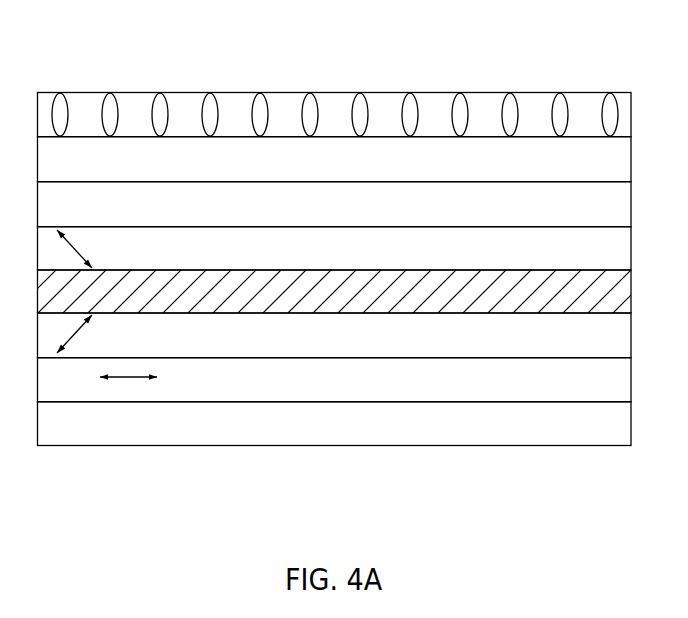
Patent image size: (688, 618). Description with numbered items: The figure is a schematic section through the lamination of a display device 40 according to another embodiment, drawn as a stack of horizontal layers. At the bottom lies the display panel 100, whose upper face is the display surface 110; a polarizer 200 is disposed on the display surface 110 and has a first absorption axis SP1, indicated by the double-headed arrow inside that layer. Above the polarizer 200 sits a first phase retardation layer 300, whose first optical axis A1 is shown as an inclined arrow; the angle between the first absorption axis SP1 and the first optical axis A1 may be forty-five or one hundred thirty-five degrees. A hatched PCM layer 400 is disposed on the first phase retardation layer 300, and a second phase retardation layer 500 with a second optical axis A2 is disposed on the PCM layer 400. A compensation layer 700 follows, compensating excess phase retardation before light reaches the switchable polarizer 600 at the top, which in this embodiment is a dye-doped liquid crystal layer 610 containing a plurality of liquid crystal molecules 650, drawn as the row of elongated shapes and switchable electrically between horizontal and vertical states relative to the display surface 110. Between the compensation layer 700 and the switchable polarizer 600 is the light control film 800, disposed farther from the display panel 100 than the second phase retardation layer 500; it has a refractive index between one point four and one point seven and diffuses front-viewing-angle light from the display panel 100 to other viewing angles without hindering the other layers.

The display device 40 is at (40, 52).
The switchable polarizer 600 is at (234, 92).
The dye-doped liquid crystal layer 610 is at (335, 88).
The liquid crystal molecules 650 is at (462, 105).
The light control film 800 is at (357, 176).
The compensation layer 700 is at (357, 218).
The second phase retardation layer 500 is at (357, 264).
The PCM layer 400 is at (357, 310).
The first phase retardation layer 300 is at (357, 350).
The polarizer 200 is at (357, 396).
The display panel 100 is at (357, 440).
The display surface 110 is at (442, 393).
The first optical axis A1 is at (83, 334).
The second optical axis A2 is at (83, 249).
The first absorption axis SP1 is at (127, 377).